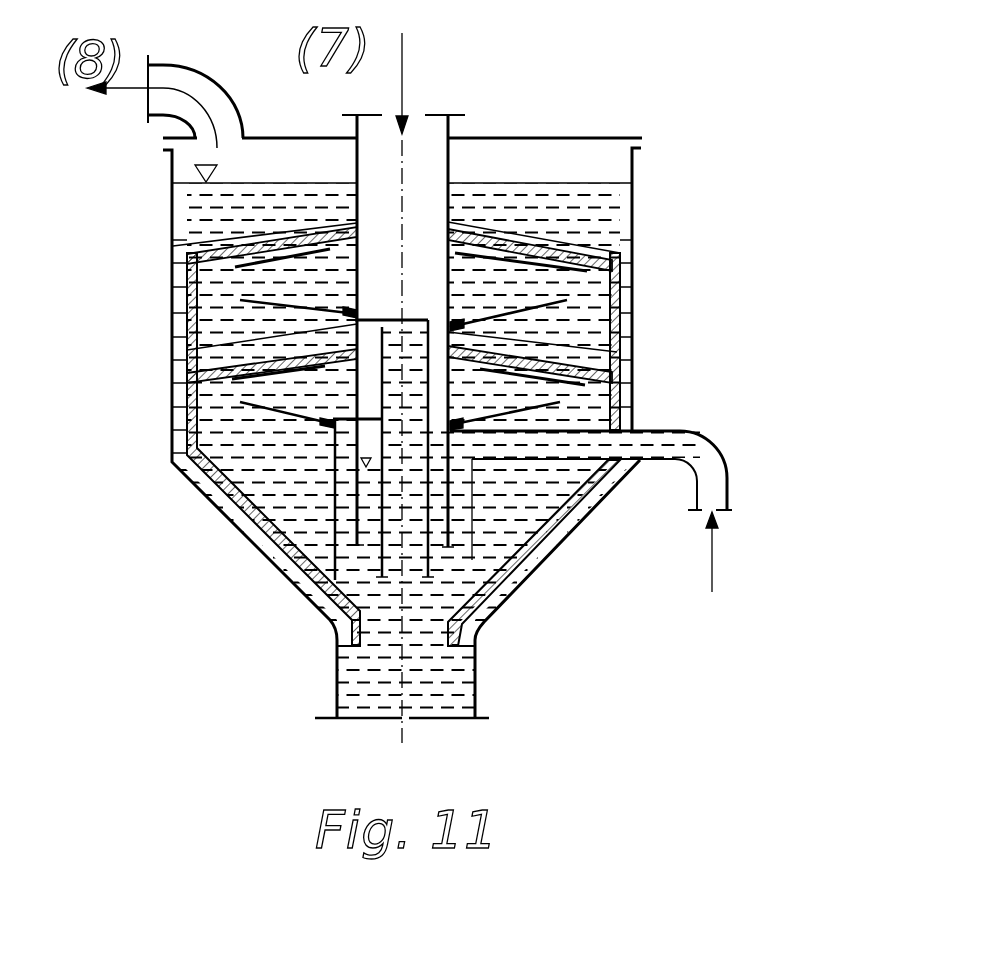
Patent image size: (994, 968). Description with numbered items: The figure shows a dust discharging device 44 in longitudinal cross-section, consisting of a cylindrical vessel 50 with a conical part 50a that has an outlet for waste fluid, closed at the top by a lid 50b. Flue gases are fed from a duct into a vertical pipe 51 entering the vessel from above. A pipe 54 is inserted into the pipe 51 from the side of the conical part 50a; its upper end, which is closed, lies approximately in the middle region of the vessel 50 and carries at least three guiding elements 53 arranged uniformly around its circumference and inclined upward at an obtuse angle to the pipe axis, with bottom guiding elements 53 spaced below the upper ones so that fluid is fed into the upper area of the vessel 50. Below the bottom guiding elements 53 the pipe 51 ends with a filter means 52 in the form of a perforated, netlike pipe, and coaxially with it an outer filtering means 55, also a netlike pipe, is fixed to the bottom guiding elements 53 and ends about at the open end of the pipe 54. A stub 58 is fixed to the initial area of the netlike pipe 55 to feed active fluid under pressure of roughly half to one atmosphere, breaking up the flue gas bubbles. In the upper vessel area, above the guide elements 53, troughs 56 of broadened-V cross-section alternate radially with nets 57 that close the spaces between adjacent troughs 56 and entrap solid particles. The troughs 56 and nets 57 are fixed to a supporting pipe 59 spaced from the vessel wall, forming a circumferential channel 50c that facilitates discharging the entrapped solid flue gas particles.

The dust discharging device 44 is at (745, 343).
The cylindrical vessel 50 is at (602, 165).
The conical part 50a is at (507, 590).
The vessel lid 50b is at (695, 86).
The circumferential channel 50c is at (627, 305).
The vertical pipe 51 is at (447, 160).
The filter means 52 is at (340, 548).
The guiding elements 53 is at (352, 412).
The pipe 54 is at (425, 488).
The outer filtering means 55 is at (335, 500).
The troughs 56 is at (622, 262).
The nets 57 is at (200, 270).
The stub 58 is at (813, 492).
The supporting pipe 59 is at (187, 325).